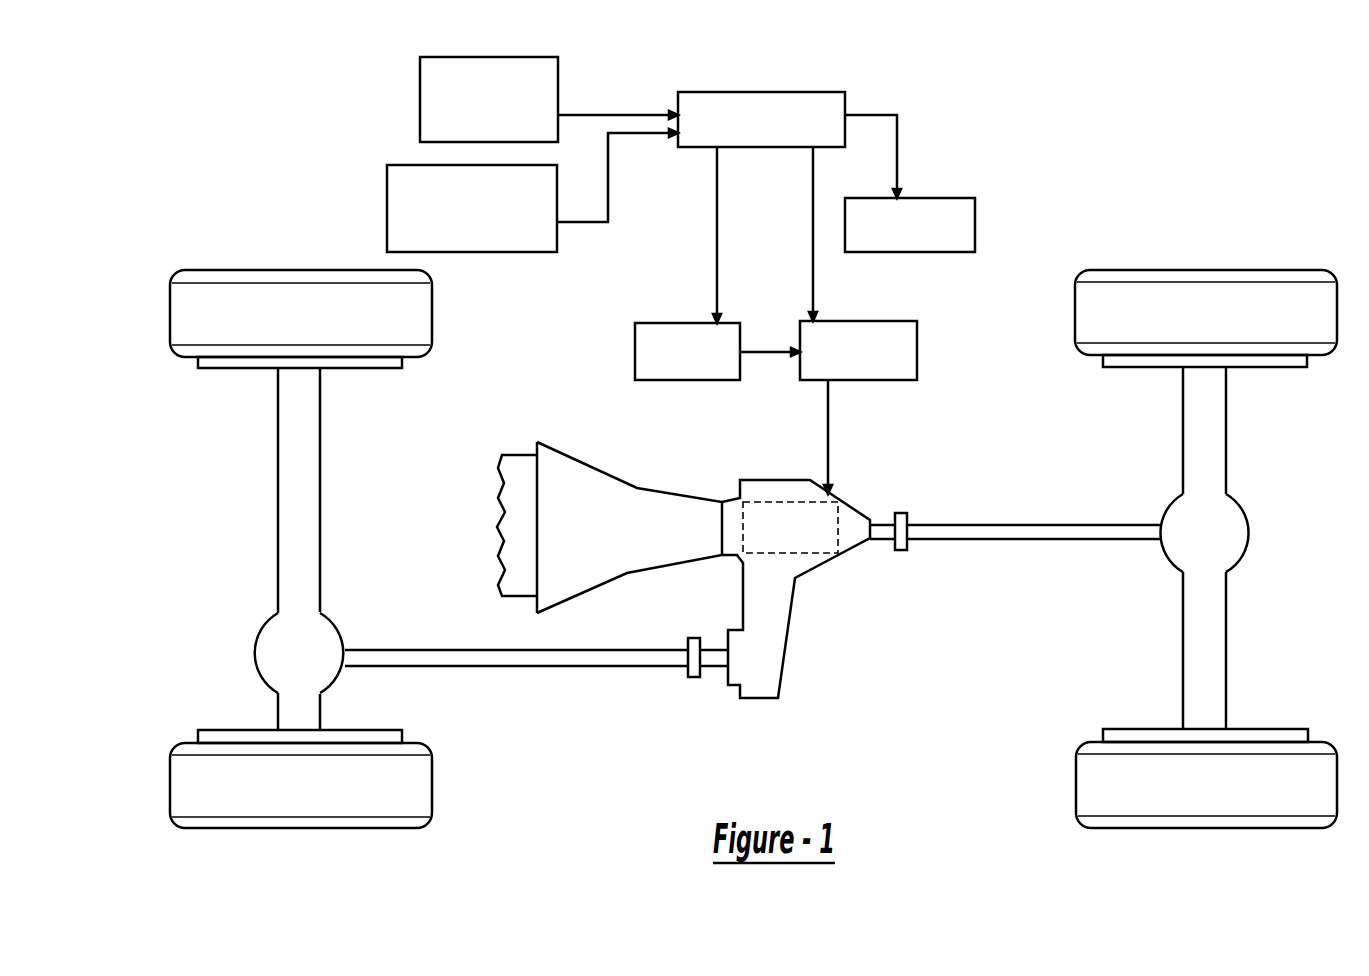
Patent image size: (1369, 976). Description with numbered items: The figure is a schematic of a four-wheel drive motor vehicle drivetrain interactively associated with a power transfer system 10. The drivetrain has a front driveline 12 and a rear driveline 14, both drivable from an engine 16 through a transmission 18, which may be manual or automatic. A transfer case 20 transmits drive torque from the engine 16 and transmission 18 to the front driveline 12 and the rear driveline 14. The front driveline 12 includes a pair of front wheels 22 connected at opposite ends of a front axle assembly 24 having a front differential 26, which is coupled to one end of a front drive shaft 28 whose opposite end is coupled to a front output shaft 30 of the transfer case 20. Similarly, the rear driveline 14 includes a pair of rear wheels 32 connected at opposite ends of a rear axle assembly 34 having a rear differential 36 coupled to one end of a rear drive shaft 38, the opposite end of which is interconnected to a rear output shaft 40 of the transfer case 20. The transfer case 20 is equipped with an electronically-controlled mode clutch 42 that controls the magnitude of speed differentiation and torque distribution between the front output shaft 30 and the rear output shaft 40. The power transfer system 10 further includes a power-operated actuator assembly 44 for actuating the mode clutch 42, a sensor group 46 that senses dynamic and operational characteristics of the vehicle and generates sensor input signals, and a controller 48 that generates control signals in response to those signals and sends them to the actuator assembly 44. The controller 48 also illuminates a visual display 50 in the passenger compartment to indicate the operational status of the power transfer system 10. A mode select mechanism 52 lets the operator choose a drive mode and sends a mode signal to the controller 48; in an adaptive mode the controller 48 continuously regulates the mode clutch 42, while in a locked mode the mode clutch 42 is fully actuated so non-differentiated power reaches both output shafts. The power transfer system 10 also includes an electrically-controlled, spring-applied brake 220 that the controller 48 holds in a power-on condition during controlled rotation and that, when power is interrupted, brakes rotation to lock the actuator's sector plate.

The power transfer system 10 is at (930, 152).
The front driveline 12 is at (357, 556).
The rear driveline 14 is at (1075, 492).
The engine 16 is at (512, 537).
The transmission 18 is at (630, 556).
The transfer case 20 is at (824, 580).
The front wheels 22 is at (208, 300).
The front axle assembly 24 is at (288, 428).
The front differential 26 is at (263, 638).
The front drive shaft 28 is at (647, 665).
The front output shaft 30 is at (710, 664).
The rear wheels 32 is at (1210, 298).
The rear axle assembly 34 is at (1210, 414).
The rear differential 36 is at (1225, 541).
The rear drive shaft 38 is at (1063, 534).
The rear output shaft 40 is at (878, 518).
The mode clutch 42 is at (773, 502).
The actuator assembly 44 is at (917, 330).
The sensor group 46 is at (420, 111).
The controller 48 is at (748, 92).
The visual display 50 is at (975, 210).
The mode select mechanism 52 is at (489, 252).
The brake 220 is at (690, 380).